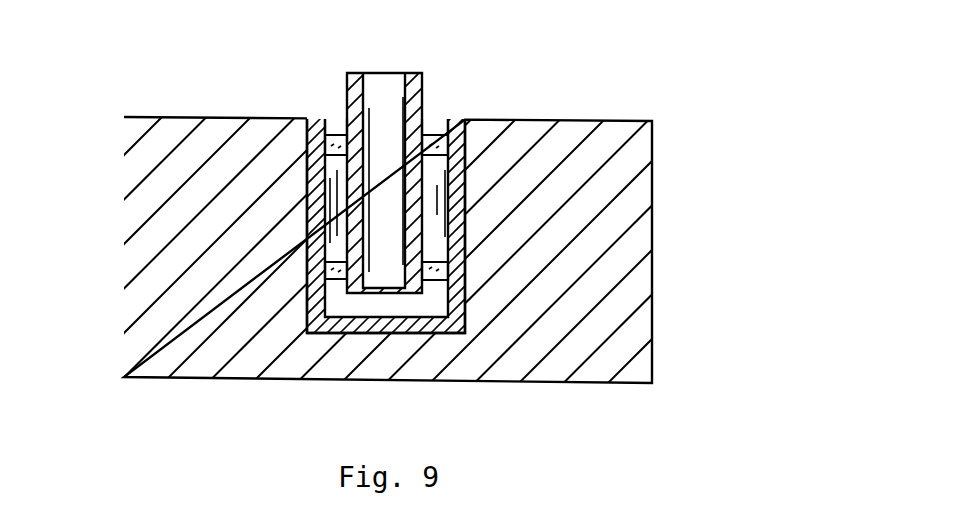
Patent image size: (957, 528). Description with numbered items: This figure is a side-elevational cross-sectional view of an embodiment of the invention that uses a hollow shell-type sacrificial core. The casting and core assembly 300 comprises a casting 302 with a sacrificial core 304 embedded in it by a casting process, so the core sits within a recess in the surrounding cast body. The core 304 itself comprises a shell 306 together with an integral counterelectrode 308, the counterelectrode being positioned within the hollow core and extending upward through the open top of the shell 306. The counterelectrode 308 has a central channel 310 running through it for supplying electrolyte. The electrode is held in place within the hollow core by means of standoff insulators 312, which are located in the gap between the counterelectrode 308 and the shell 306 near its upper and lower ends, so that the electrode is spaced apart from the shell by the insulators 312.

The casting and core assembly 300 is at (757, 238).
The casting 302 is at (655, 148).
The sacrificial core 304 is at (305, 317).
The shell 306 is at (322, 240).
The counterelectrode 308 is at (347, 77).
The central channel 310 is at (379, 88).
The standoff insulators 312 is at (337, 127).